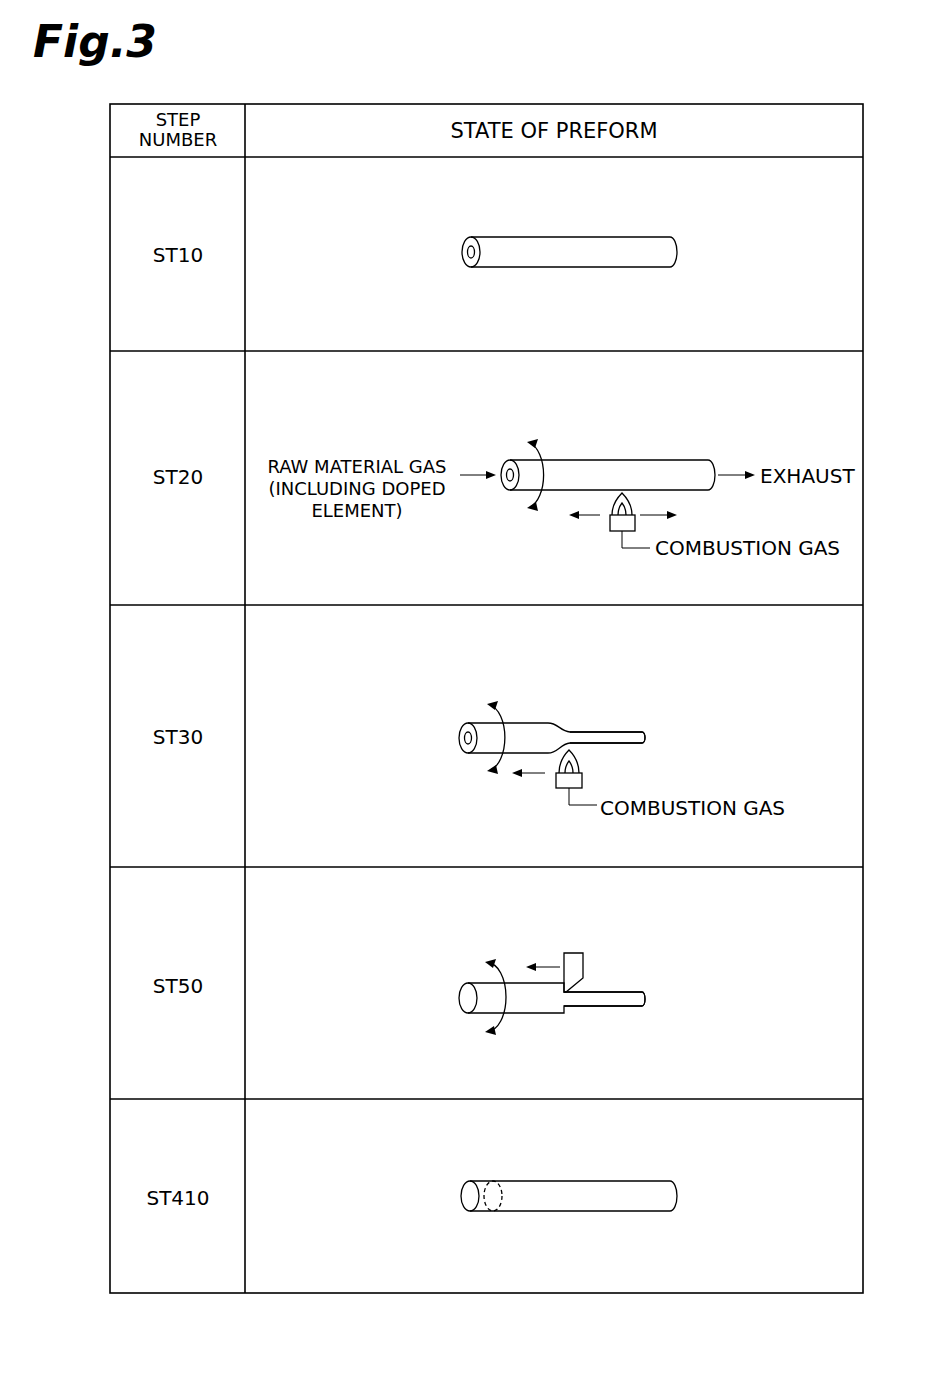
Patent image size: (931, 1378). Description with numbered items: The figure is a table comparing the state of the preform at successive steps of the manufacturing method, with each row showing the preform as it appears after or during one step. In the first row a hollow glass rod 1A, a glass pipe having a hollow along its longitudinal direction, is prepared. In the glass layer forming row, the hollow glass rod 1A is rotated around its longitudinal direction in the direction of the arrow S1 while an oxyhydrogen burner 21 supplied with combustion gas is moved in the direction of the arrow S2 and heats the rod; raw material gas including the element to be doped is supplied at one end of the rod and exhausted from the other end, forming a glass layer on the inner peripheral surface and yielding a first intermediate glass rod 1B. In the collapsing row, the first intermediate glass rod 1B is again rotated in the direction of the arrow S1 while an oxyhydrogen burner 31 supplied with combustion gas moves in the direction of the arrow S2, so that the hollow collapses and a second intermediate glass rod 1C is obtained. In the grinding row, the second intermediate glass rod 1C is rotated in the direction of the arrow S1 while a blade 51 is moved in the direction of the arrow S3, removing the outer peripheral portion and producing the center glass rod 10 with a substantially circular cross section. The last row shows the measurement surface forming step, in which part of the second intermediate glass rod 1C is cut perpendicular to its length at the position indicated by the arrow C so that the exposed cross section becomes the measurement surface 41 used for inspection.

The hollow glass rod 1A is at (665, 252).
The first intermediate glass rod 1B is at (488, 748).
The second intermediate glass rod 1C is at (628, 718).
The center glass rod 10 is at (630, 1011).
The oxyhydrogen burner 21 is at (640, 500).
The oxyhydrogen burner 31 is at (582, 765).
The measurement surface 41 is at (505, 1205).
The blade 51 is at (585, 968).
The arrow indicating rotation direction S1 is at (548, 442).
The arrow indicating burner movement direction S2 is at (597, 517).
The arrow indicating blade movement direction S3 is at (545, 967).
The arrow indicating cutting position C is at (495, 1172).